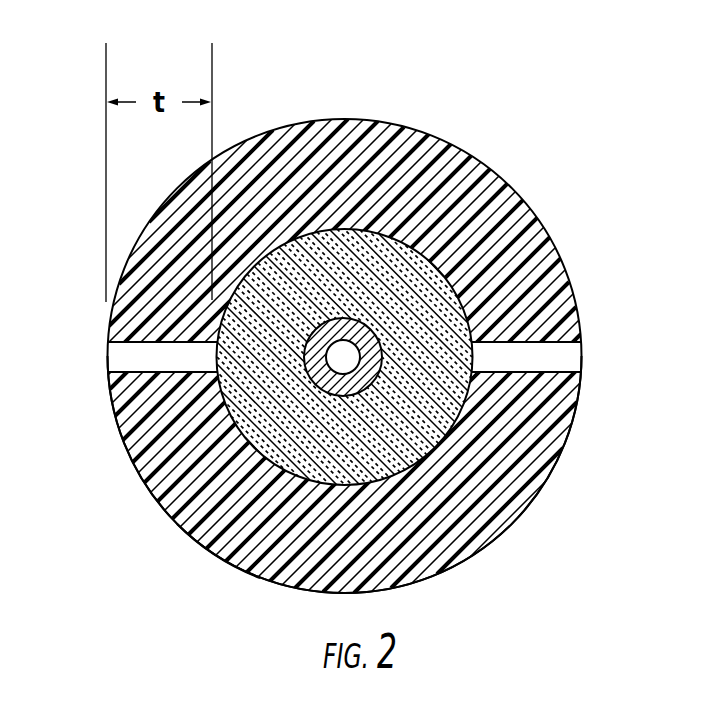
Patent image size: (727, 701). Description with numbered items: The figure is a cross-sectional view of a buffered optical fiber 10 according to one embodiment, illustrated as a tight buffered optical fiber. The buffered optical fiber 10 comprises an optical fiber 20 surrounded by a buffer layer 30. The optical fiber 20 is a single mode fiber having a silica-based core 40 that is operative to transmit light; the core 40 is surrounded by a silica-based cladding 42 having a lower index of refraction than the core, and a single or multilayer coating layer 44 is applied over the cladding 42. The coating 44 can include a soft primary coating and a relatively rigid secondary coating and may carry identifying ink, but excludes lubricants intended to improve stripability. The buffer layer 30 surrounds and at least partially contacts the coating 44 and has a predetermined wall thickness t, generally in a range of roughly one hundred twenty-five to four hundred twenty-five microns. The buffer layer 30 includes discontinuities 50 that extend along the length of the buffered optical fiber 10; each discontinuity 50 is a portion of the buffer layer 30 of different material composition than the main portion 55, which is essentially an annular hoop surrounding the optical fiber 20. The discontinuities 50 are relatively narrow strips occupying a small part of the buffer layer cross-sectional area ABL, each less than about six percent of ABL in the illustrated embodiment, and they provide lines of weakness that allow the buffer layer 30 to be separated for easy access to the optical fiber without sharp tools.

The buffered optical fiber 10 is at (386, 105).
The optical fiber 20 is at (480, 226).
The buffer layer 30 is at (522, 460).
The core 40 is at (346, 351).
The cladding 42 is at (326, 327).
The coating layer 44 is at (383, 447).
The discontinuities 50 is at (118, 355).
The main portion 55 is at (138, 475).
The buffer layer cross-sectional area ABL is at (223, 540).